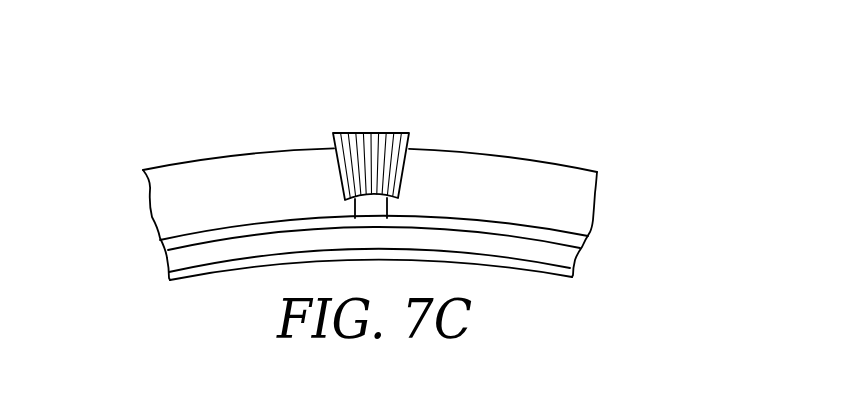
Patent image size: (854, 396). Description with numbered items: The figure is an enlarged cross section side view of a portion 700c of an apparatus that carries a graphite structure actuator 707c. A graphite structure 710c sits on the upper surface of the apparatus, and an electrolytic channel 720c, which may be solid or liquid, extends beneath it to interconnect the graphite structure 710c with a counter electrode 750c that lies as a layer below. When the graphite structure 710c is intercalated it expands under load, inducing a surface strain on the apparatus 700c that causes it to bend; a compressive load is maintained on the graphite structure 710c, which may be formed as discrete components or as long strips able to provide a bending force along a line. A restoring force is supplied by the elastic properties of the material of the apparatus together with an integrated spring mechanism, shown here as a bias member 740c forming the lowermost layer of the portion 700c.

The portion of an apparatus 700c is at (172, 138).
The graphite structure actuator 707c is at (322, 200).
The graphite structure 710c is at (362, 133).
The electrolytic channel 720c is at (383, 203).
The counter electrode 750c is at (560, 238).
The bias member 740c is at (555, 274).